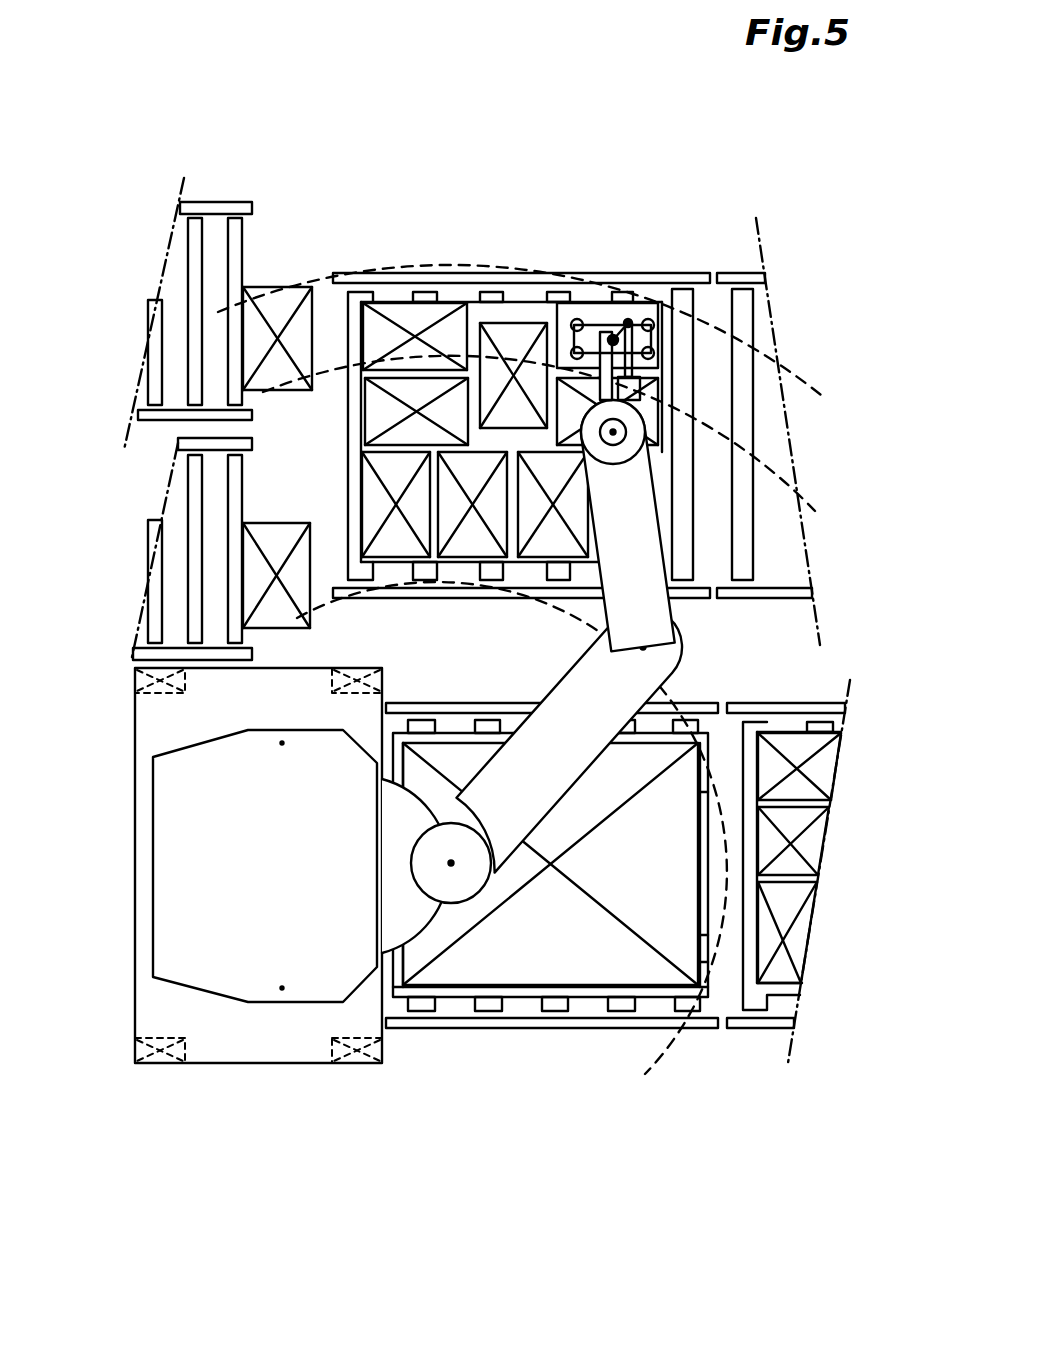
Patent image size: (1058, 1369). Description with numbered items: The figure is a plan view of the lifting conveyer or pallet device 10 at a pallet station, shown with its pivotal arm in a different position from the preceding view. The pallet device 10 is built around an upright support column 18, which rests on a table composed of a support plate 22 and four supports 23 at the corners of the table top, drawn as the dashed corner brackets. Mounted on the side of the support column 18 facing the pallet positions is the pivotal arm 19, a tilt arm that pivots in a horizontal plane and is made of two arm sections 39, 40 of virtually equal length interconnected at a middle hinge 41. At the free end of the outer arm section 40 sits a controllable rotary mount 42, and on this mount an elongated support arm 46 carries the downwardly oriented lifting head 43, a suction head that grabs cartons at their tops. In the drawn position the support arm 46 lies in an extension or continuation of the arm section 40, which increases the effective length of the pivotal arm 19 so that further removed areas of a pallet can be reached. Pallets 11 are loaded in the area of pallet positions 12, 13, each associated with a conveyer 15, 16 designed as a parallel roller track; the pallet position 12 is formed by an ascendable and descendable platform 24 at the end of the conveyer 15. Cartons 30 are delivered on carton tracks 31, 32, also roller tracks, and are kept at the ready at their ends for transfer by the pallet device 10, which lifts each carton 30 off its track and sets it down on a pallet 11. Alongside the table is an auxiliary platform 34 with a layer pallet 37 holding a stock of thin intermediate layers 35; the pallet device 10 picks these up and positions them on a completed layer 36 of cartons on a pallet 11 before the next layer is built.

The pallet device 10 is at (246, 974).
The pallet 11 is at (601, 272).
The pallet position 12 is at (627, 187).
The pallet position 13 is at (828, 927).
The conveyer 15 is at (805, 262).
The conveyer 16 is at (863, 775).
The support column 18 is at (300, 988).
The pivotal arm 19 is at (580, 795).
The support plate 22 is at (143, 988).
The supports 23 is at (178, 1063).
The platform 24 is at (665, 265).
The carton 30 is at (277, 297).
The carton track 31 is at (231, 168).
The carton track 32 is at (131, 503).
The auxiliary platform 34 is at (632, 1035).
The intermediate layer 35 is at (687, 871).
The layer 36 is at (392, 300).
The layer pallet 37 is at (520, 810).
The arm section 39 is at (538, 853).
The arm section 40 is at (638, 562).
The middle hinge 41 is at (646, 647).
The rotary mount 42 is at (625, 431).
The lifting head 43 is at (656, 341).
The support arm 46 is at (633, 366).